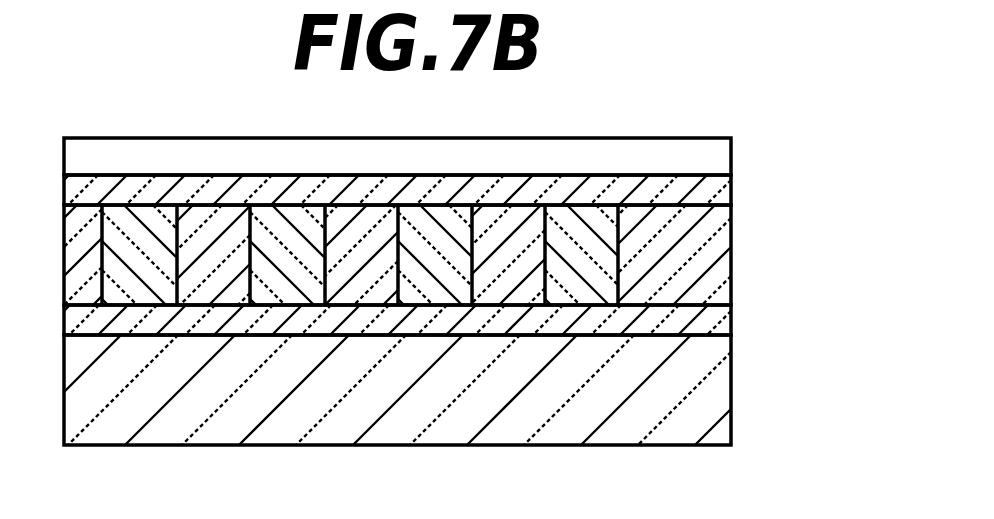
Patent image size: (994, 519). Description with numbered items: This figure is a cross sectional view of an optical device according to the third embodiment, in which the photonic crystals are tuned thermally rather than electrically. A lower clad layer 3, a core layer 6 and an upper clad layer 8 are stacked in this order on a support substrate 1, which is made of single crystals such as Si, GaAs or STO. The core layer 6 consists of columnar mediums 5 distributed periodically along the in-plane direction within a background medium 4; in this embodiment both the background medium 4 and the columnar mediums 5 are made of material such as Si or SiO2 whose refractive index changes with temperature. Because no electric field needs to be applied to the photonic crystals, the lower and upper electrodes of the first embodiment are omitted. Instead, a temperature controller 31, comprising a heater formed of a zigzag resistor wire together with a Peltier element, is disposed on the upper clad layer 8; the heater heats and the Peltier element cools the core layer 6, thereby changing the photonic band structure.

The support substrate 1 is at (731, 407).
The lower clad layer 3 is at (731, 322).
The background medium 4 is at (731, 272).
The columnar mediums 5 is at (620, 240).
The core layer 6 is at (835, 197).
The upper clad layer 8 is at (731, 192).
The temperature controller 31 is at (731, 152).